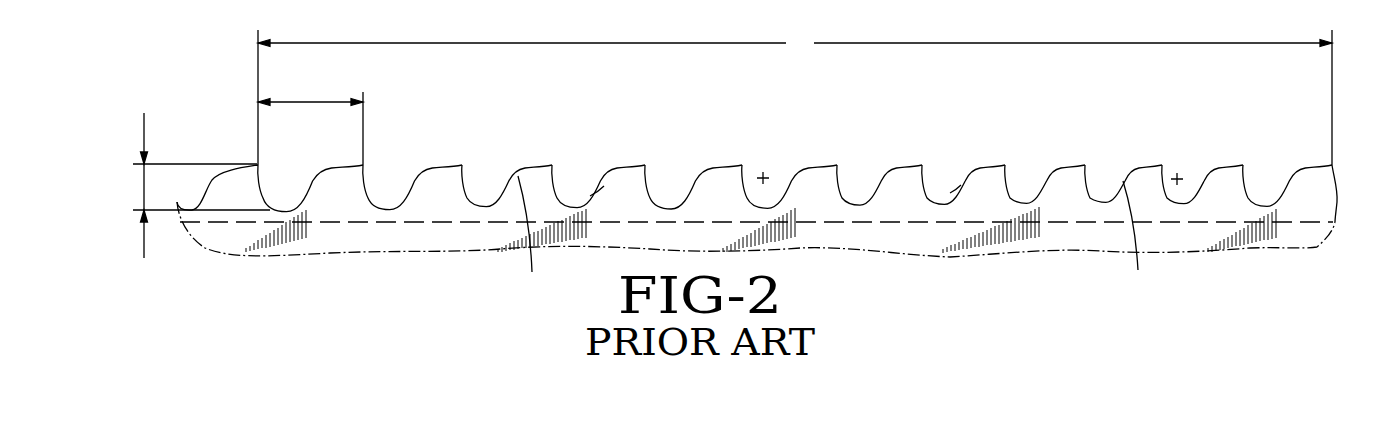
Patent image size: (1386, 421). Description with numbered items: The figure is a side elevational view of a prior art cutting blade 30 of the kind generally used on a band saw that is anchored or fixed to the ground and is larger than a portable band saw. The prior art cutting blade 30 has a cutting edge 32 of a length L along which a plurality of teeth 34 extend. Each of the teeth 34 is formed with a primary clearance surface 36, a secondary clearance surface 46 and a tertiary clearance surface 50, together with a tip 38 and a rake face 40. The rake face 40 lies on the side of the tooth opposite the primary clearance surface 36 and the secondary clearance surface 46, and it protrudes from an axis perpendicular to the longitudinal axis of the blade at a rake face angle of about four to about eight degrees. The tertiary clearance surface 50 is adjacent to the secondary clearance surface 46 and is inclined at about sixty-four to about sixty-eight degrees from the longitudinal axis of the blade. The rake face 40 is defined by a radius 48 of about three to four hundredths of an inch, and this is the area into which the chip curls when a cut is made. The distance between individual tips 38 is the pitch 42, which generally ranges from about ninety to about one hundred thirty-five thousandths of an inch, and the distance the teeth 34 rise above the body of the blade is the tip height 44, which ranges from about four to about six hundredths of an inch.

The prior art cutting blade 30 is at (216, 109).
The cutting edge 32 is at (1343, 183).
The teeth 34 is at (633, 164).
The primary clearance surface 36 is at (551, 168).
The tip 38 is at (462, 167).
The rake face 40 is at (648, 182).
The pitch 42 is at (310, 100).
The tip height 44 is at (143, 187).
The secondary clearance surface 46 is at (834, 235).
The radius 48 is at (742, 237).
The tertiary clearance surface 50 is at (600, 188).